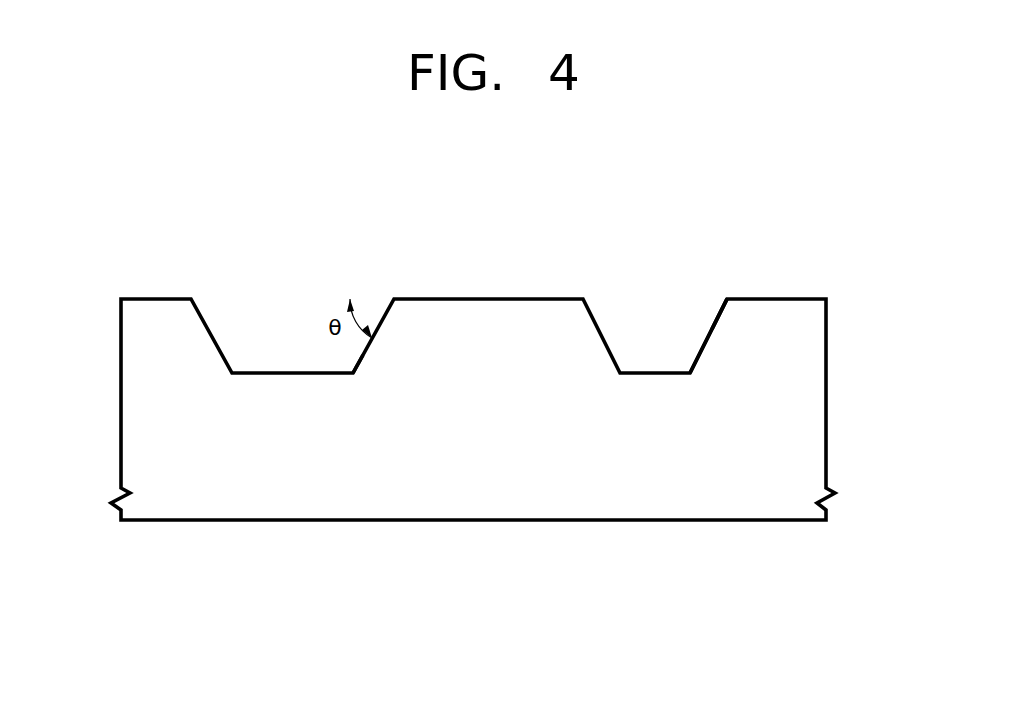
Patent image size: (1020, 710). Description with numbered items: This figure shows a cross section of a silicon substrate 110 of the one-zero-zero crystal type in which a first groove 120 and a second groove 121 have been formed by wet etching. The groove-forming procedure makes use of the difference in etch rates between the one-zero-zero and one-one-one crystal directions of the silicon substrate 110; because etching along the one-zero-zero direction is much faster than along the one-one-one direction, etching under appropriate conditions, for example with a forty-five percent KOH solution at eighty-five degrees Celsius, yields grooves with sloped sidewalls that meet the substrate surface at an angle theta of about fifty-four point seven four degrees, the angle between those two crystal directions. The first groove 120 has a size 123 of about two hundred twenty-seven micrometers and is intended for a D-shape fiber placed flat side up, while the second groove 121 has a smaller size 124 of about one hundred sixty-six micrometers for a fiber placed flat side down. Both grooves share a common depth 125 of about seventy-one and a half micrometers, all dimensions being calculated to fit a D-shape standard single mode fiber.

The silicon substrate 110 is at (810, 474).
The first groove 120 is at (250, 372).
The second groove 121 is at (672, 368).
The size of the first groove 123 is at (191, 297).
The size of the second groove 124 is at (727, 297).
The depth 125 is at (335, 299).